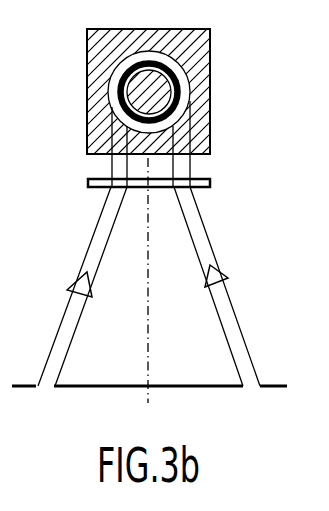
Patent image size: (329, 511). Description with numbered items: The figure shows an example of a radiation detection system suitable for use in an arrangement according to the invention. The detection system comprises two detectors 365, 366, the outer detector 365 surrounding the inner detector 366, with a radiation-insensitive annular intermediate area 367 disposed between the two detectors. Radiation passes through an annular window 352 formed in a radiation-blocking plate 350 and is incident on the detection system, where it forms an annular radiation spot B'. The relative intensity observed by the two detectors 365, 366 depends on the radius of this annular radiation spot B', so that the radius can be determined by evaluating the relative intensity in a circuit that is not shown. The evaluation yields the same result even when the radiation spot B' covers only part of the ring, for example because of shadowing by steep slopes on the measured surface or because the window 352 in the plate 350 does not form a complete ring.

The detector 365 is at (197, 115).
The detector 366 is at (156, 95).
The radiation-insensitive annular intermediate area 367 is at (177, 78).
The annular radiation spot B' is at (183, 78).
The radiation-blocking plate 350 is at (207, 388).
The annular window 352 is at (253, 388).